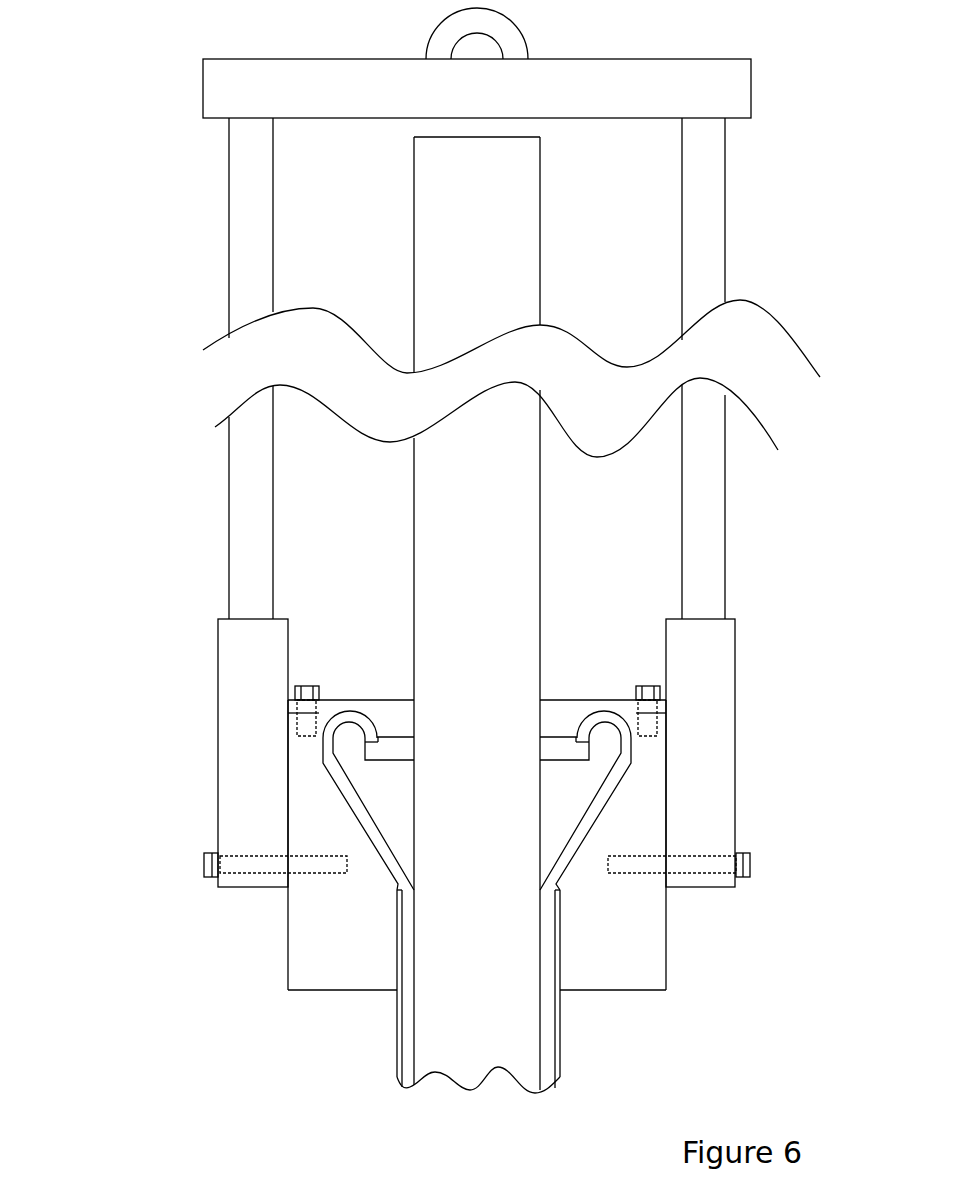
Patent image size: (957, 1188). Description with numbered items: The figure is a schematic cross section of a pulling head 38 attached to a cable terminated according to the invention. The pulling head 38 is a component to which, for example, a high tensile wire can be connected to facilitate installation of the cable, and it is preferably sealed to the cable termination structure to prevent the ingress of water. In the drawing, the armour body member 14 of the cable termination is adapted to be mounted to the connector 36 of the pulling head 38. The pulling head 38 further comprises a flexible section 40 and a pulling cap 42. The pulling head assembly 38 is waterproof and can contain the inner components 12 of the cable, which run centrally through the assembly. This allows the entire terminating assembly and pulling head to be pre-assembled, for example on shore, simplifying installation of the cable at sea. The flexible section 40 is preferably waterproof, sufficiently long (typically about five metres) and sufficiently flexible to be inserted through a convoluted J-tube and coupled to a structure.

The inner components 12 is at (518, 243).
The armour body member 14 is at (650, 980).
The connector 36 is at (698, 834).
The pulling head 38 is at (198, 204).
The flexible section 40 is at (703, 568).
The pulling cap 42 is at (686, 90).